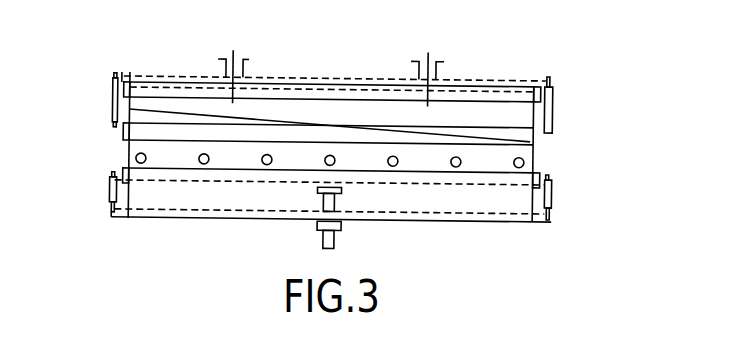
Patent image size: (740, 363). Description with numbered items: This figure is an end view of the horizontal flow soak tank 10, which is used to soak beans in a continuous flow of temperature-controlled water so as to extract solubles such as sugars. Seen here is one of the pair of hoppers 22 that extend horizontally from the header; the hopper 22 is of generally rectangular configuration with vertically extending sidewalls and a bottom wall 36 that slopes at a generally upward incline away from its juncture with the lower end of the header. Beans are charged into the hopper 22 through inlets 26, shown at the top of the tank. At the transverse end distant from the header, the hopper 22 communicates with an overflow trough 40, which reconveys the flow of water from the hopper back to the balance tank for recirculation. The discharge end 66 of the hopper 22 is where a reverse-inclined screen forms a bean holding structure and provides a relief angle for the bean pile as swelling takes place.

The horizontal flow soak tank 10 is at (332, 140).
The hopper 22 is at (518, 115).
The inlets 26 is at (230, 50).
The bottom wall 36 is at (440, 213).
The overflow trough 40 is at (165, 153).
The discharge end 66 is at (503, 210).